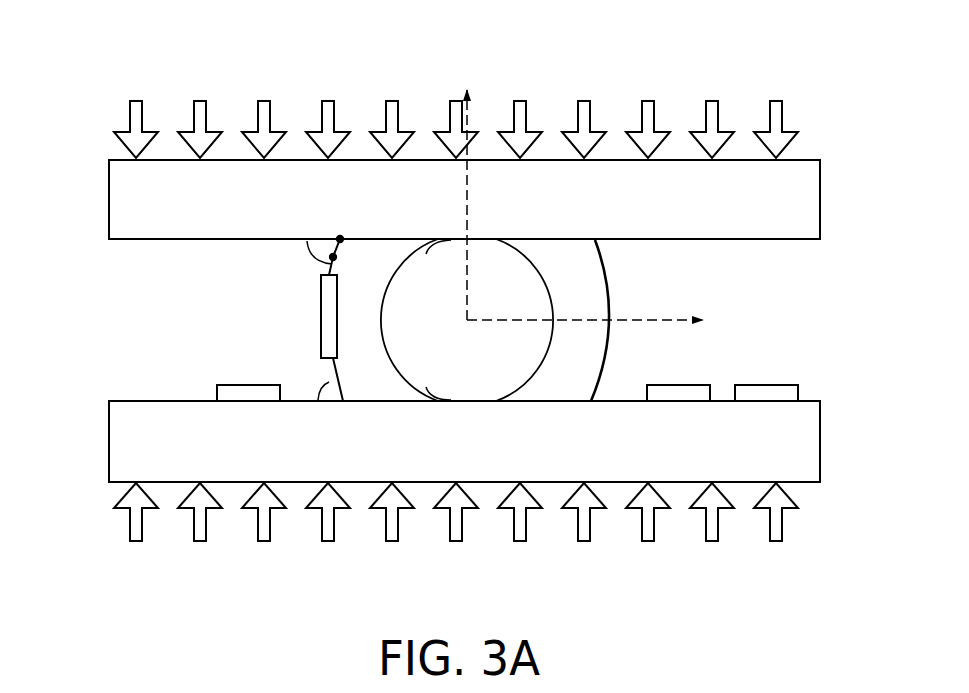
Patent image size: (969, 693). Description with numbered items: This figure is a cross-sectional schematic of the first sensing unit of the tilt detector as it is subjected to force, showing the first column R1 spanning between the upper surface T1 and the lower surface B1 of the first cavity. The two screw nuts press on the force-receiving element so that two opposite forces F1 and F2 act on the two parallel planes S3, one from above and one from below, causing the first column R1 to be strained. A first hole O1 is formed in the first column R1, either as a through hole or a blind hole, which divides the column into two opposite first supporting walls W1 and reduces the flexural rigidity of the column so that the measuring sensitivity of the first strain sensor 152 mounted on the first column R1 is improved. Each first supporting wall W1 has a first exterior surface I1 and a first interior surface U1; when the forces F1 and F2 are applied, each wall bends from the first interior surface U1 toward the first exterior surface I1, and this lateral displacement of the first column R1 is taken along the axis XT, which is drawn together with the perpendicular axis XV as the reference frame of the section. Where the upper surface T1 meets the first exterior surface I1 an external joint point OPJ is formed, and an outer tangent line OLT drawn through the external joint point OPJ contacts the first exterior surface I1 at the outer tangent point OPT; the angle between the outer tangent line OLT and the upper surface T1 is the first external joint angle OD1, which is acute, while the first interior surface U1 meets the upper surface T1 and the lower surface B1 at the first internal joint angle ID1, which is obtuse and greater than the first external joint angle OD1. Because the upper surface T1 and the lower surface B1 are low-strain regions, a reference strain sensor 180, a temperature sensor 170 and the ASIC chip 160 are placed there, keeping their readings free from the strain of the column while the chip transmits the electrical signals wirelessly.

The upper surface T1 is at (150, 242).
The lower surface B1 is at (128, 398).
The parallel planes S3 is at (807, 156).
The force F1 is at (784, 117).
The force F2 is at (785, 524).
The first strain sensor 152 is at (330, 315).
The outer tangent point OPT is at (339, 239).
The external joint point OPJ is at (339, 239).
The outer tangent line OLT is at (352, 190).
The first external joint angle OD1 is at (297, 320).
The first internal joint angle ID1 is at (444, 320).
The first hole O1 is at (484, 343).
The first interior surface U1 is at (549, 310).
The first exterior surface I1 is at (611, 308).
The first column R1 is at (567, 259).
The first supporting walls W1 is at (549, 253).
The vertical axis XV is at (485, 192).
The axis XT is at (606, 321).
The reference strain sensor 180 is at (241, 391).
The temperature sensor 170 is at (684, 392).
The ASIC chip 160 is at (770, 392).